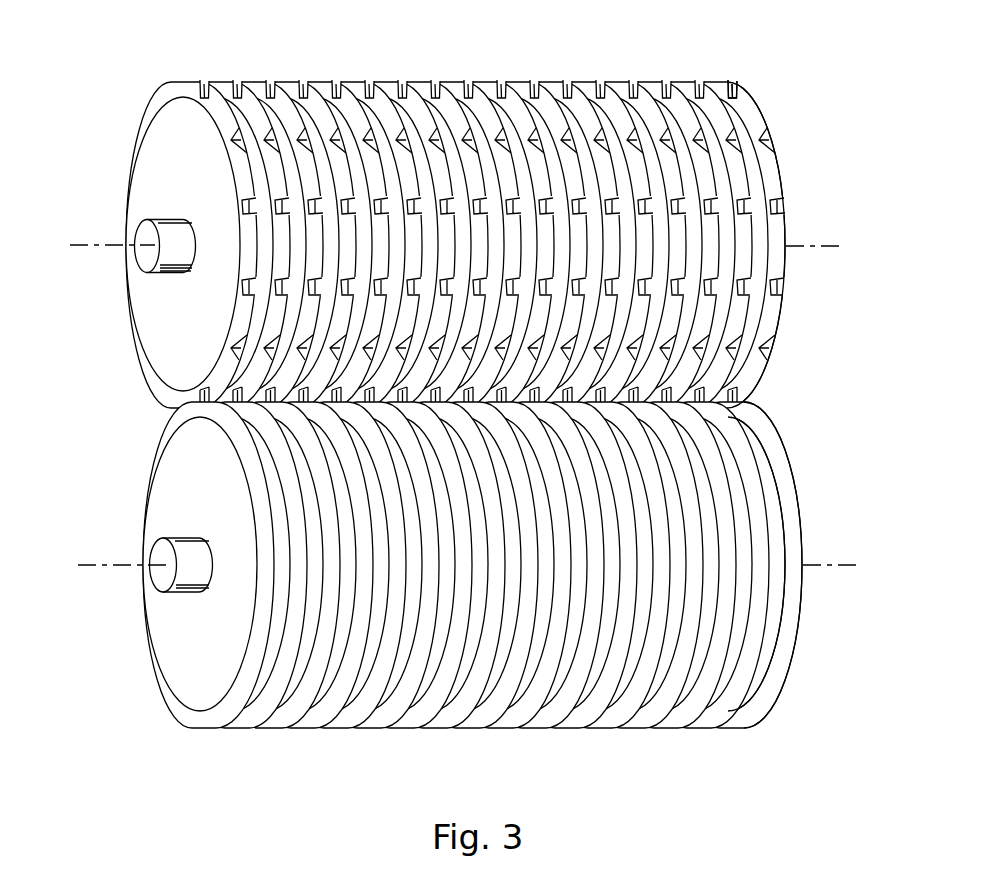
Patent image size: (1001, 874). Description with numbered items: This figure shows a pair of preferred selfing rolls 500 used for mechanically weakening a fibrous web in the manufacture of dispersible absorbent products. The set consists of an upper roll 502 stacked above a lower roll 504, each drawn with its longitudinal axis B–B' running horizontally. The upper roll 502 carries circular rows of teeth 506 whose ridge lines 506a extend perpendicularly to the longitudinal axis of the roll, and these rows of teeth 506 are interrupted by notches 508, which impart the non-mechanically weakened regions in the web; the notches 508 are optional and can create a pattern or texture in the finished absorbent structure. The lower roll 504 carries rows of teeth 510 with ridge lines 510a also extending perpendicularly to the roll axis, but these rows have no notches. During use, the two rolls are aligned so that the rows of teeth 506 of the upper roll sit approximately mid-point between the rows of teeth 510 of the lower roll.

The selfing rolls 500 is at (252, 53).
The upper roll 502 is at (157, 82).
The lower roll 504 is at (142, 453).
The rows of teeth 506 is at (735, 172).
The ridge lines 506a is at (713, 84).
The notches 508 is at (787, 292).
The rows of teeth 510 is at (755, 495).
The ridge lines 510a is at (768, 517).